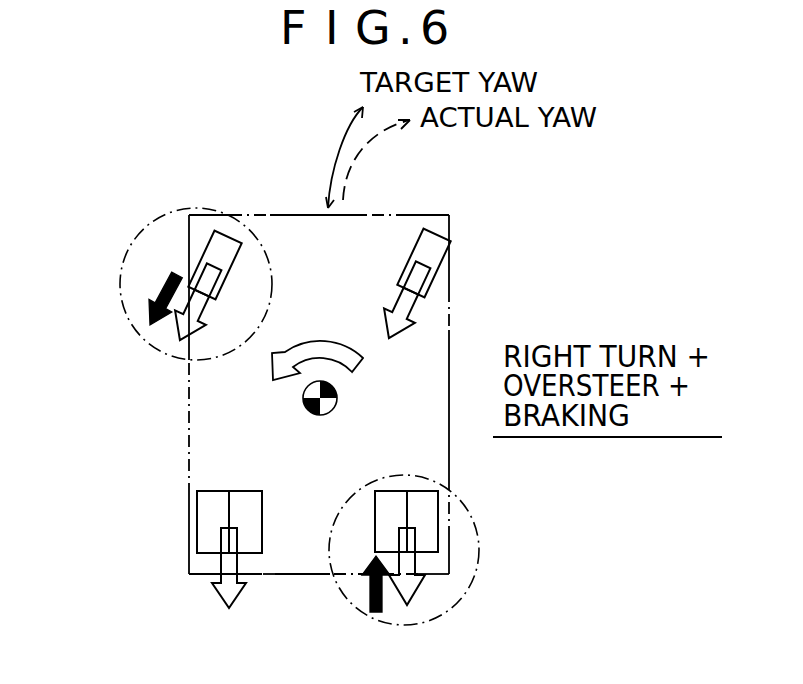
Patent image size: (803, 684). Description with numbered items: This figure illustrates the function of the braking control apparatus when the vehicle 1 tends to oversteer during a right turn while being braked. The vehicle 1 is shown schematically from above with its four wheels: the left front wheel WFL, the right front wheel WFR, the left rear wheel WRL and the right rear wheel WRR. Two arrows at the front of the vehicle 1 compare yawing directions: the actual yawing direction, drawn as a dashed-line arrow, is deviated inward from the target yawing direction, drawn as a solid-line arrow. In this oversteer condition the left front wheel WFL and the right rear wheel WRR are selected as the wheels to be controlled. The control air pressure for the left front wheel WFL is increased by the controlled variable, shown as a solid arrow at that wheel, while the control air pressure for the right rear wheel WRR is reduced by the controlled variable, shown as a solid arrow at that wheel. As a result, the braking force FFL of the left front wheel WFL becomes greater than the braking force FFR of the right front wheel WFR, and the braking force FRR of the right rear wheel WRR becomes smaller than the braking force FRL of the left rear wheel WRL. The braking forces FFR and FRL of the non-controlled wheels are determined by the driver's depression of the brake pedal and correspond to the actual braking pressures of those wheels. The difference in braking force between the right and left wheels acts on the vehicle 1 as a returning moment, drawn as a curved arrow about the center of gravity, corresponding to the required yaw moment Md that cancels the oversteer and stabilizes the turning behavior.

The vehicle 1 is at (368, 214).
The left front wheel WFL is at (222, 240).
The right front wheel WFR is at (433, 240).
The left rear wheel WRL is at (205, 510).
The right rear wheel WRR is at (430, 508).
The braking force of the left front wheel FFL is at (177, 318).
The braking force of the right front wheel FFR is at (400, 332).
The braking force of the left rear wheel FRL is at (215, 597).
The braking force of the right rear wheel FRR is at (420, 587).
The required yaw moment Md is at (277, 380).